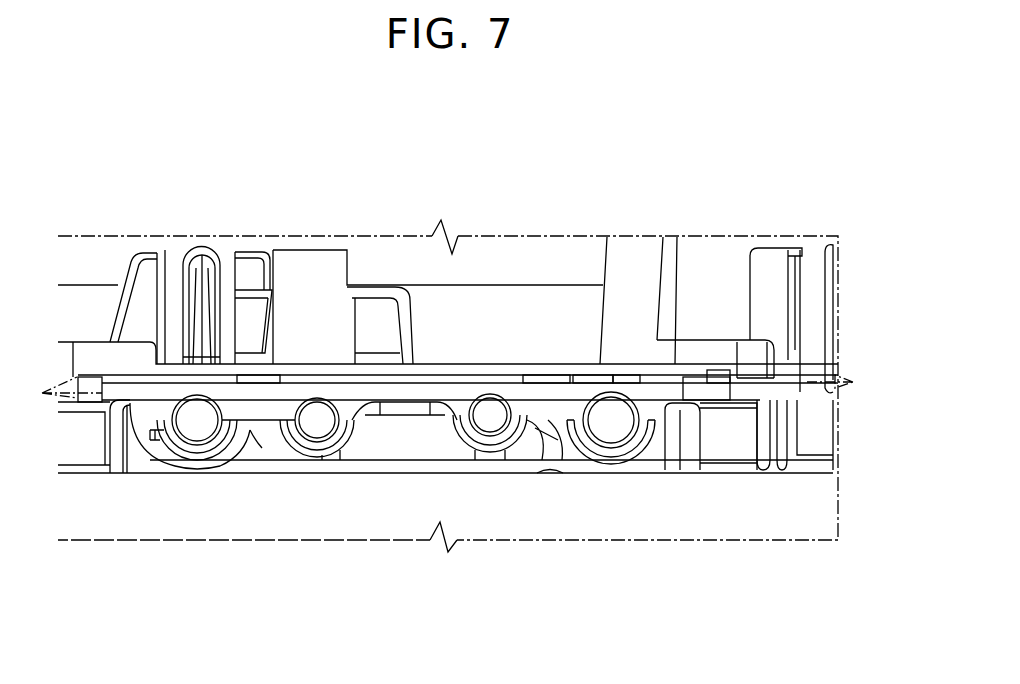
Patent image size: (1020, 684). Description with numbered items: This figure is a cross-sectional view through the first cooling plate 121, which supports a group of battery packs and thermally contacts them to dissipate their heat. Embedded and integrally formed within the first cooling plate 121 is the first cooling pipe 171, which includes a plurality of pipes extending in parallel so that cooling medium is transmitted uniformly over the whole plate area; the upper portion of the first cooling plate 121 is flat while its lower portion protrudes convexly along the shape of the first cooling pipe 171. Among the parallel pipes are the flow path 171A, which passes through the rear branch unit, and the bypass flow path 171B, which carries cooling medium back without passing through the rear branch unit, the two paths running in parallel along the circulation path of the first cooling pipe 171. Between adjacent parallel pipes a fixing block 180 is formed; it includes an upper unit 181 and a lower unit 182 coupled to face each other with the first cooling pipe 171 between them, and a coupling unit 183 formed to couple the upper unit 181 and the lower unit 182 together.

The first cooling plate 121 is at (722, 231).
The fixing block 180 is at (413, 392).
The upper unit 181 is at (525, 397).
The lower unit 182 is at (577, 432).
The coupling unit 183 is at (641, 452).
The first cooling pipe 171 is at (188, 582).
The flow path 171A is at (203, 447).
The bypass flow path 171B is at (315, 442).